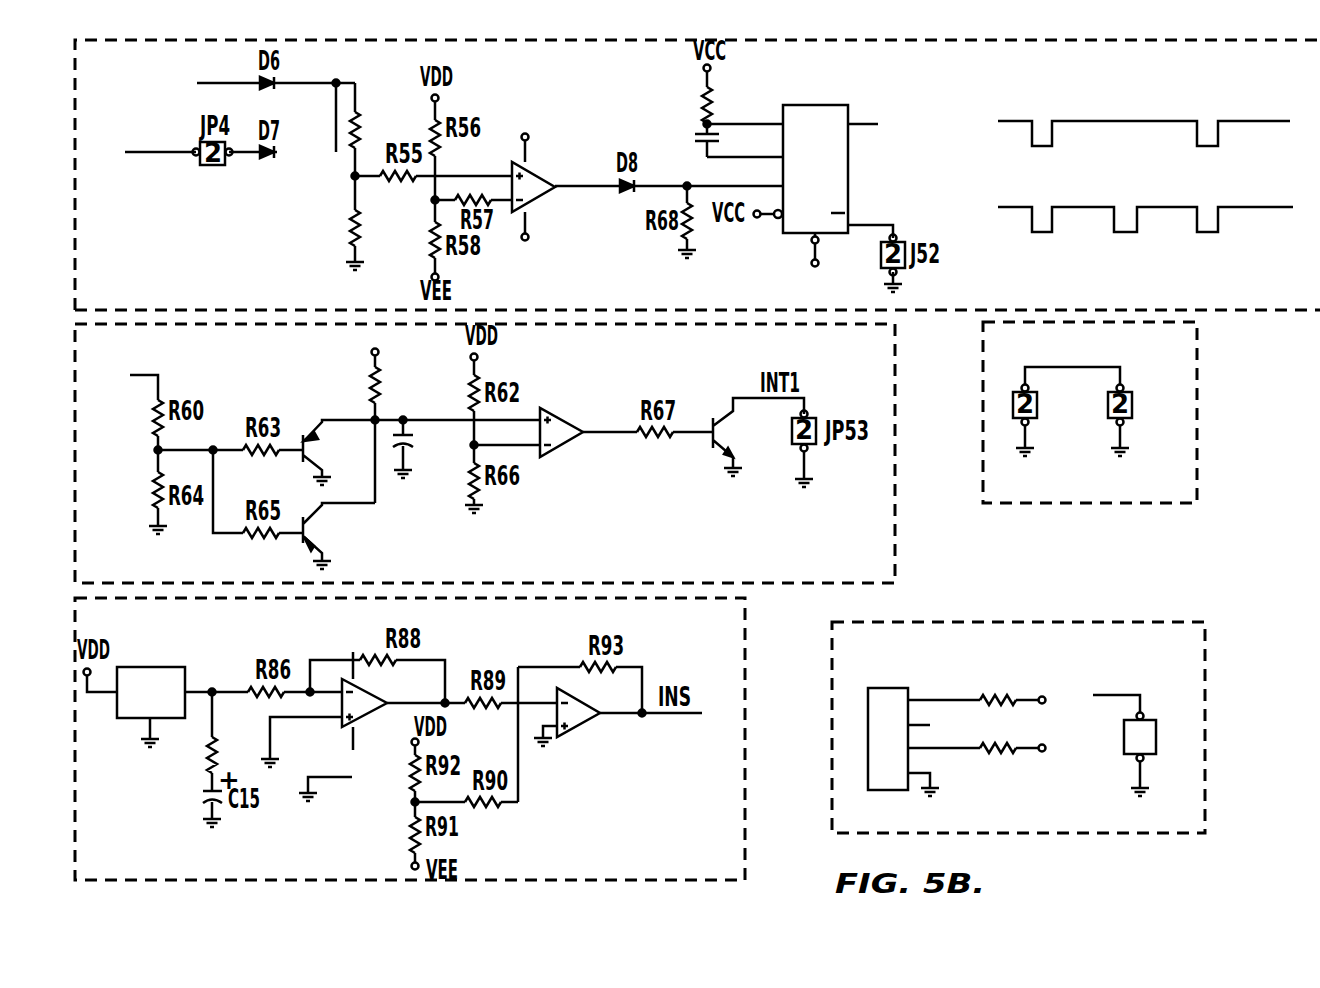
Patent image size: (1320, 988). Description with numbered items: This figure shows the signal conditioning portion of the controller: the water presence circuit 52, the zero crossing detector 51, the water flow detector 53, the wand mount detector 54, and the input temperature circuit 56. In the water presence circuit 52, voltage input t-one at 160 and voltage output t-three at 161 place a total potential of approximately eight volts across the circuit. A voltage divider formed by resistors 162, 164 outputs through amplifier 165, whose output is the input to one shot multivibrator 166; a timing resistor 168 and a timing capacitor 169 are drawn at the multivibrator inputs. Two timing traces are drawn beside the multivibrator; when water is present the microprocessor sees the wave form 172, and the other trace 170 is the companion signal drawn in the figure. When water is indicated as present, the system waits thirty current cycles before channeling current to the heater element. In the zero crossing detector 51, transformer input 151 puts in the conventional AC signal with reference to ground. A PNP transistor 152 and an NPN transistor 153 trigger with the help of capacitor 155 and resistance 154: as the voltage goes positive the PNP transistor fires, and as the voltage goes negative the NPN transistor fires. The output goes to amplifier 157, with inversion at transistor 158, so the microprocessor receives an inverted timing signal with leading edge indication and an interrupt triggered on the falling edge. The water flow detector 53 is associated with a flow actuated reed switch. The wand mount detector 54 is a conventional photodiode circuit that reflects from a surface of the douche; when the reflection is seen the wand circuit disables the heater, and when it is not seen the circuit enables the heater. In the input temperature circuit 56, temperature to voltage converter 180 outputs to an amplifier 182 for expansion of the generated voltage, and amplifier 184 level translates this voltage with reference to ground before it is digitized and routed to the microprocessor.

The water presence circuit 52 is at (72, 215).
The voltage output t3 161 is at (199, 83).
The voltage input t1 160 is at (161, 168).
The voltage divider resistor 162 is at (362, 114).
The voltage divider resistor 164 is at (350, 227).
The amplifier 165 is at (538, 170).
The resistor R69 168 is at (699, 94).
The capacitor C7 169 is at (698, 139).
The one shot multivibrator 166 is at (840, 105).
The wave form 172 is at (1187, 122).
The T1+T3 signal waveform 170 is at (1187, 208).
The zero crossing detector 51 is at (116, 557).
The transformer input 151 is at (138, 380).
The transistor Q1 152 is at (306, 435).
The transistor Q2 153 is at (302, 553).
The resistance 154 is at (384, 376).
The capacitor 155 is at (410, 452).
The amplifier 157 is at (556, 410).
The transistor 158 is at (714, 455).
The water flow detector 53 is at (1197, 478).
The input temperature 56 is at (155, 859).
The temperature to voltage converter 180 is at (189, 678).
The amplifier 182 is at (372, 712).
The amplifier 184 is at (578, 731).
The wand mount detector 54 is at (1177, 623).